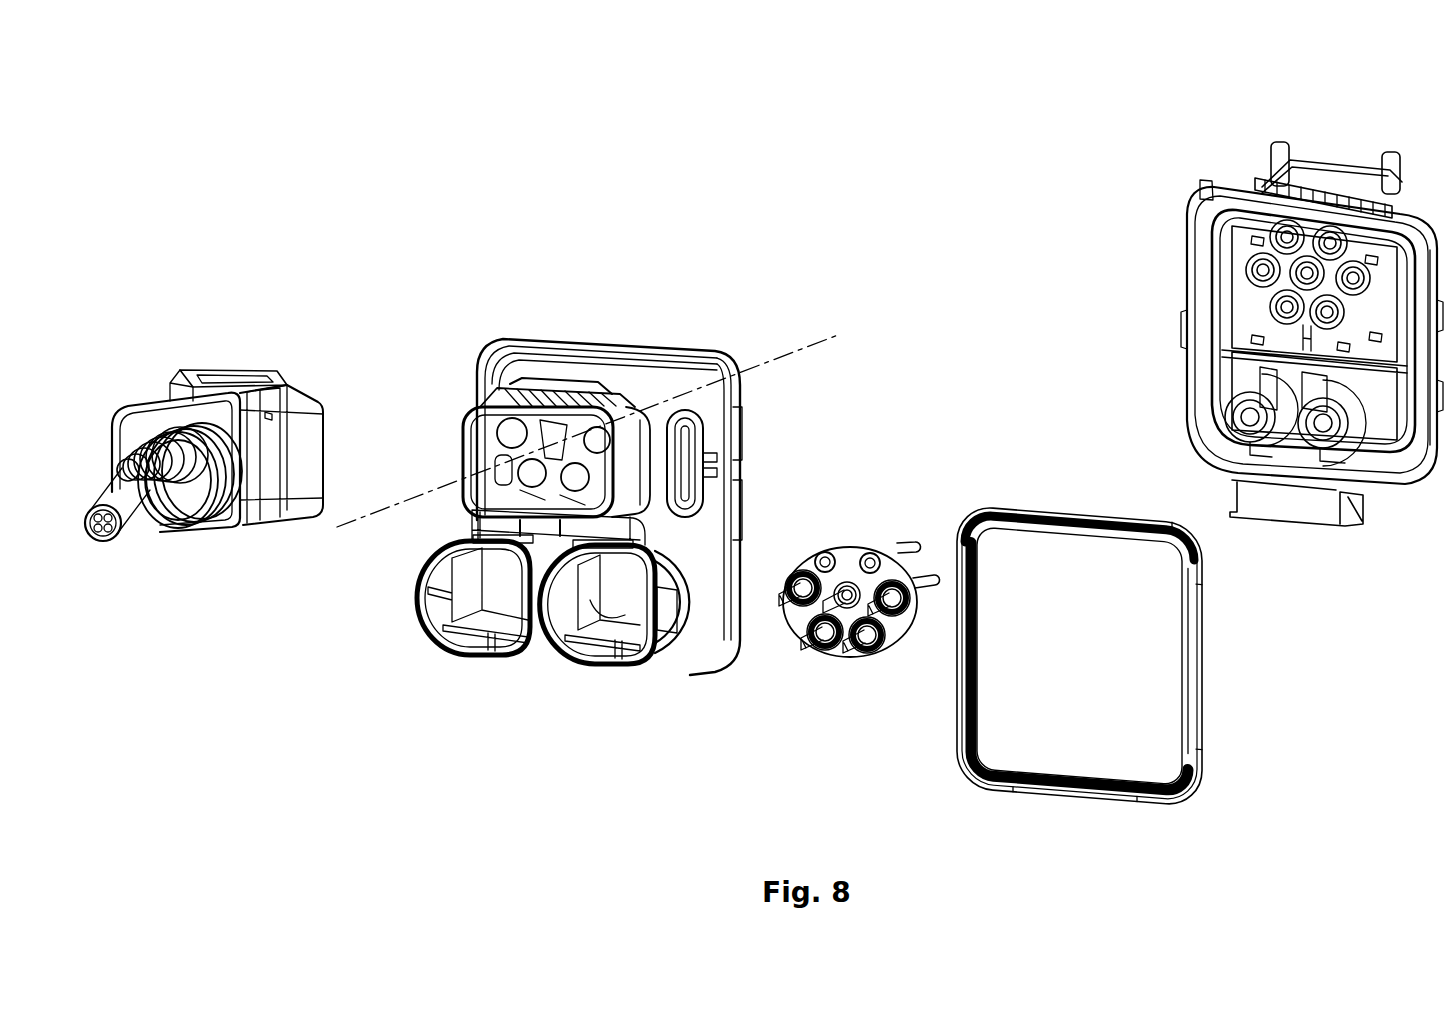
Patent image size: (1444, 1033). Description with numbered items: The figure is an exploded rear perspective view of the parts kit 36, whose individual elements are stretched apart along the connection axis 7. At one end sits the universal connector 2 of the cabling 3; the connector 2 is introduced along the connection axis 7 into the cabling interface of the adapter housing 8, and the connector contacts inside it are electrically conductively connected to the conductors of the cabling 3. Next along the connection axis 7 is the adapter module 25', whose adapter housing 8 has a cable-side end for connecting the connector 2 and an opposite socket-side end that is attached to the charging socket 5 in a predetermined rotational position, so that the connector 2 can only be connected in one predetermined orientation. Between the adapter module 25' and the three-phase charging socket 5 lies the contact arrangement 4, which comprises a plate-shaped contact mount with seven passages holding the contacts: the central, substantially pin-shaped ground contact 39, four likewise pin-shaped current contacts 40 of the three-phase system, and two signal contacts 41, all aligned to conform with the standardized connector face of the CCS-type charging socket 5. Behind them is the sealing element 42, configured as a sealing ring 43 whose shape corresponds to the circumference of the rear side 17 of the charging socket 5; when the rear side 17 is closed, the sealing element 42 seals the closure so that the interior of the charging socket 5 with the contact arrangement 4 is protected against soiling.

The parts kit 36 is at (752, 115).
The connector 2 is at (247, 353).
The cabling 3 is at (107, 563).
The connection axis 7 is at (800, 348).
The adapter module 25' is at (579, 463).
The adapter housing 8 is at (617, 387).
The contact arrangement 4 is at (832, 473).
The ground contact 39 is at (882, 663).
The current contact 40 is at (783, 600).
The signal contact 41 is at (868, 557).
The sealing element 42 is at (1047, 502).
The sealing ring 43 is at (1205, 658).
The three-phase charging socket 5 is at (1383, 102).
The rear side 17 is at (1178, 283).